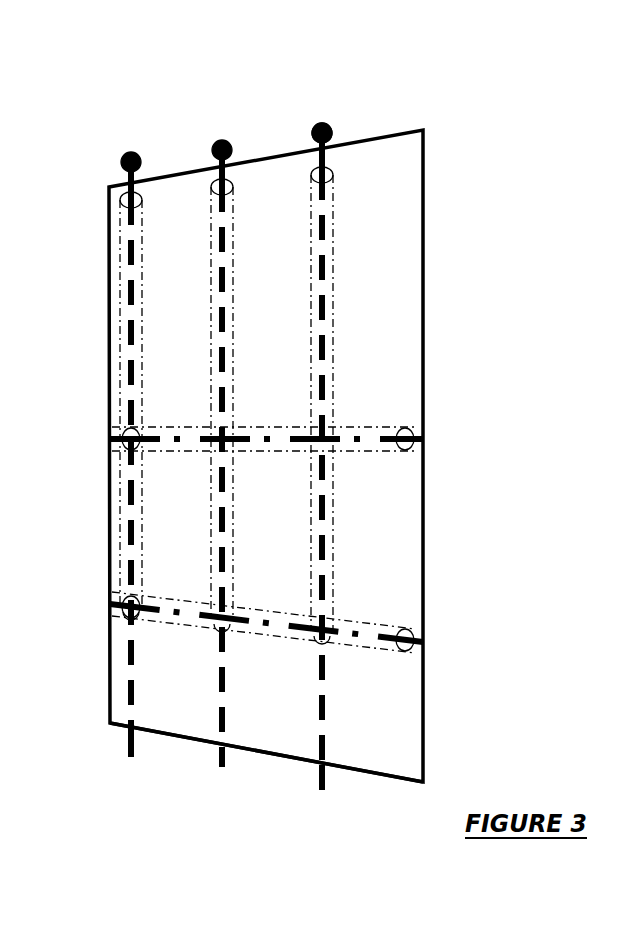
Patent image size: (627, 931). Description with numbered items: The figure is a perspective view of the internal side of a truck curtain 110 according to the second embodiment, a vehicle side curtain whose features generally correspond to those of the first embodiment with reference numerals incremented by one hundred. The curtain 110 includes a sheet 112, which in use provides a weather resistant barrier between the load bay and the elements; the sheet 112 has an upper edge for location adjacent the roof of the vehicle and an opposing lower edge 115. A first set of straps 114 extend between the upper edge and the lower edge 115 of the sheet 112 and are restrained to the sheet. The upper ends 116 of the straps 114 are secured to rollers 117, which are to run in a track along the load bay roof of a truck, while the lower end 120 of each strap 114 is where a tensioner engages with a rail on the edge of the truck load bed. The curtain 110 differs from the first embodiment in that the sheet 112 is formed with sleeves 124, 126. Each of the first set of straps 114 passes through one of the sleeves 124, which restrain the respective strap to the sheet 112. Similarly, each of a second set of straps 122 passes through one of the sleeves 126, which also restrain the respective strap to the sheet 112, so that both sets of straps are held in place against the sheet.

The truck curtain 110 is at (462, 256).
The sheet 112 is at (410, 352).
The first set of straps 114 is at (128, 730).
The lower edge 115 is at (410, 786).
The upper ends 116 is at (125, 184).
The rollers 117 is at (326, 124).
The lower end 120 is at (132, 762).
The second set of straps 122 is at (425, 432).
The sleeves 124 is at (117, 263).
The sleeves 126 is at (400, 418).